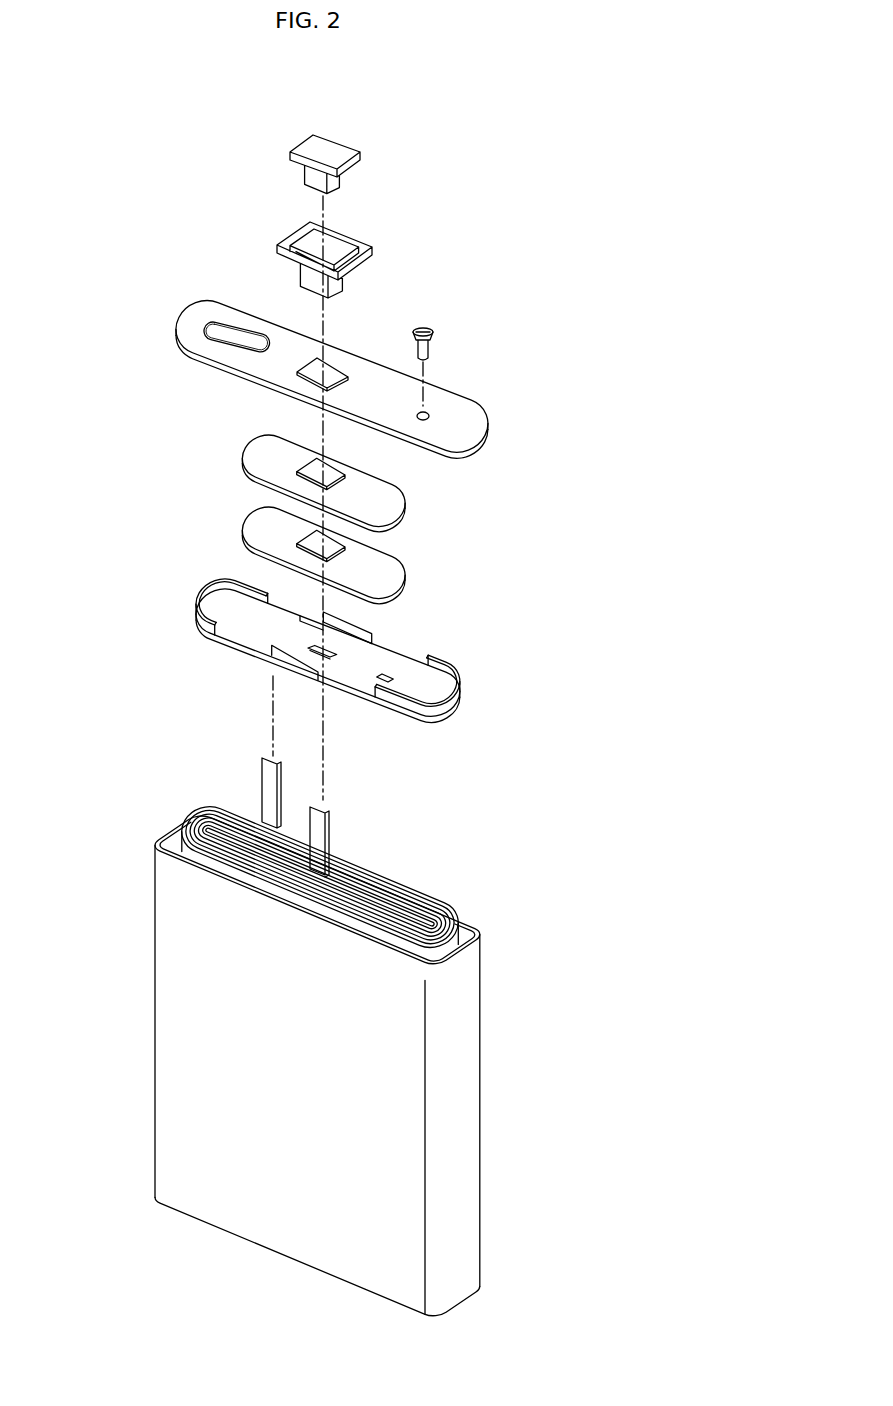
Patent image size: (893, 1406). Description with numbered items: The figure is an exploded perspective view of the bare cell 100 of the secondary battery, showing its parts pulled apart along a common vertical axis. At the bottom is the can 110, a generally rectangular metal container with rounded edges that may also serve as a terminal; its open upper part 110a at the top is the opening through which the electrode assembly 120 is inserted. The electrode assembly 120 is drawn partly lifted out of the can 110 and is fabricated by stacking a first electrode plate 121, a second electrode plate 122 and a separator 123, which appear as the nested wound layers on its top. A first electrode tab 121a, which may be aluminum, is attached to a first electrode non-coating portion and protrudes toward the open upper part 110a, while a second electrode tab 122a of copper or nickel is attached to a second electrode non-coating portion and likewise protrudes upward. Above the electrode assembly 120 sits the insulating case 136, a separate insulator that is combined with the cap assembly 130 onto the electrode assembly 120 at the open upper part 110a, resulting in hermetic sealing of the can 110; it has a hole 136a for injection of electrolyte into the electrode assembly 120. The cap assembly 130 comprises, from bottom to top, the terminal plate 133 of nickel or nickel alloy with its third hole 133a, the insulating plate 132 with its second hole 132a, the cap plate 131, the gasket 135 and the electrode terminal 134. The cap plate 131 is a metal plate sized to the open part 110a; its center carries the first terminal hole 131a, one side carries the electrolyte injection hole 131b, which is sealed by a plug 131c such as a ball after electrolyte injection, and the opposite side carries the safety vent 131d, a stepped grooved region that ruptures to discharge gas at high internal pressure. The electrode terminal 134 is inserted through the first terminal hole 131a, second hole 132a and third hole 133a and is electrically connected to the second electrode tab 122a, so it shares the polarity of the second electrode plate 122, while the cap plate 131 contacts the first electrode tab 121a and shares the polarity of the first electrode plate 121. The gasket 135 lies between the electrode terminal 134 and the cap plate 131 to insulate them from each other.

The bare cell 100 is at (313, 703).
The can 110 is at (273, 1066).
The open upper part 110a is at (175, 841).
The electrode assembly 120 is at (297, 827).
The first electrode plate 121 is at (180, 822).
The first electrode tab 121a is at (265, 778).
The second electrode plate 122 is at (218, 810).
The second electrode tab 122a is at (326, 832).
The separator 123 is at (195, 812).
The cap assembly 130 is at (339, 444).
The cap plate 131 is at (345, 373).
The first terminal hole 131a is at (328, 372).
The electrolyte injection hole 131b is at (428, 416).
The plug 131c is at (427, 326).
The safety vent 131d is at (225, 333).
The insulating plate 132 is at (326, 483).
The second hole 132a is at (398, 502).
The terminal plate 133 is at (325, 555).
The third hole 133a is at (398, 574).
The electrode terminal 134 is at (330, 150).
The gasket 135 is at (341, 236).
The insulating case 136 is at (355, 651).
The hole 136a is at (389, 672).